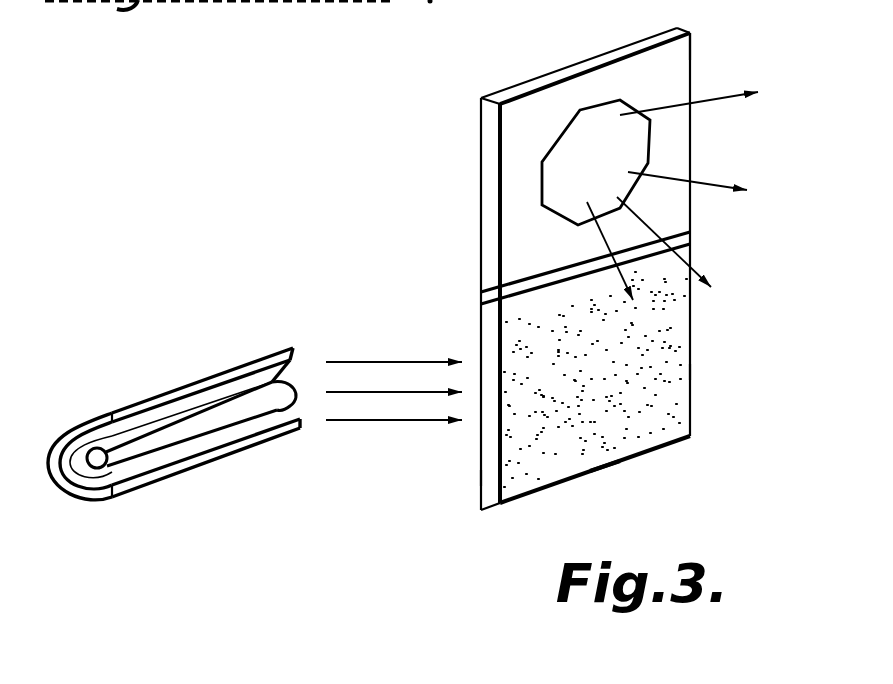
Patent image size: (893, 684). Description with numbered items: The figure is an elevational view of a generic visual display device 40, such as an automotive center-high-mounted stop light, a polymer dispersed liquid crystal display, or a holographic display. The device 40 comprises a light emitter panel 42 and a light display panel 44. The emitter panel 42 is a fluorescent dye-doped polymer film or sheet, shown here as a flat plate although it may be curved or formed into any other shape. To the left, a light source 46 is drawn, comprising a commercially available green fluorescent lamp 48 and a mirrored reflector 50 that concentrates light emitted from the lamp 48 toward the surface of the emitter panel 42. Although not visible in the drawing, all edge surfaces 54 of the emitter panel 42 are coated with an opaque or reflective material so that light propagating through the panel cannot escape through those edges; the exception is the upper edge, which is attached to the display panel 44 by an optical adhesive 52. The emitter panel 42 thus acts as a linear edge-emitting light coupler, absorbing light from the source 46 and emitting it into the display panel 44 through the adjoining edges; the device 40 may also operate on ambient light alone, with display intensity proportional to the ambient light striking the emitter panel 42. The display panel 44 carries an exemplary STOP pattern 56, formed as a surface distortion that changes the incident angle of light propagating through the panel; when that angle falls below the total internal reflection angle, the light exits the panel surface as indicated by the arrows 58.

The visual display device 40 is at (468, 88).
The light emitter panel 42 is at (691, 419).
The light display panel 44 is at (691, 55).
The light source 46 is at (111, 390).
The green fluorescent lamp 48 is at (160, 438).
The mirrored reflector 50 is at (58, 490).
The optical adhesive 52 is at (690, 229).
The edge surfaces 54 is at (479, 478).
The pattern 56 is at (590, 112).
The arrows 58 is at (713, 103).